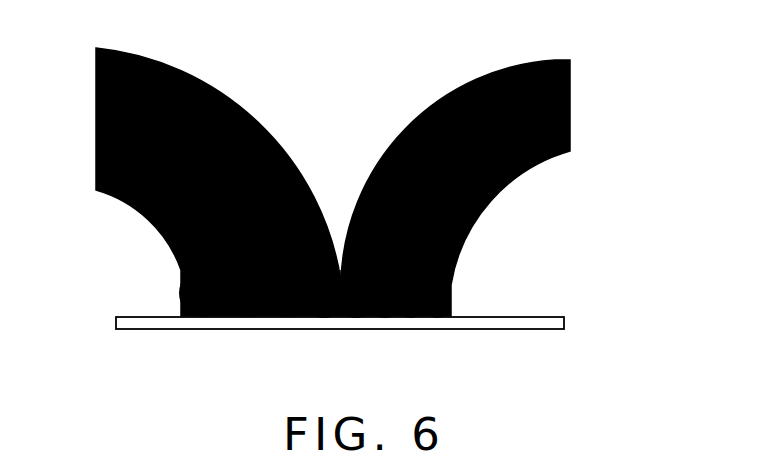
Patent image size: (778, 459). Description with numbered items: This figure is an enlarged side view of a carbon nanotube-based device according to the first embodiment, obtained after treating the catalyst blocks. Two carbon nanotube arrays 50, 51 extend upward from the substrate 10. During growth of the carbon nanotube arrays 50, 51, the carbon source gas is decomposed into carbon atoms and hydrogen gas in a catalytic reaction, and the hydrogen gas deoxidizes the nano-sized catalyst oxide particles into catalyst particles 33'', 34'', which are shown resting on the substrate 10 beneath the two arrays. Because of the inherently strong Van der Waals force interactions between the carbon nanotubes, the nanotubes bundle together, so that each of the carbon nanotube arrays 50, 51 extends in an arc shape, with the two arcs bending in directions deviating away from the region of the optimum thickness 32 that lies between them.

The carbon nanotube array 51 is at (148, 52).
The carbon nanotube array 50 is at (547, 52).
The region of the optimum thickness 32 is at (333, 272).
The substrate 10 is at (108, 310).
The catalyst particles 34'' is at (260, 323).
The catalyst particles 33'' is at (395, 332).